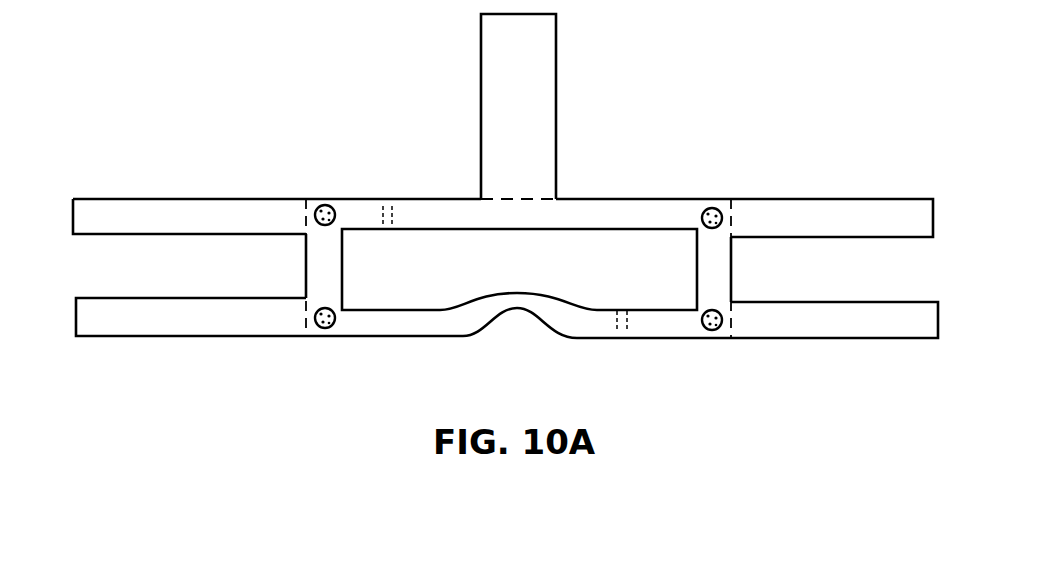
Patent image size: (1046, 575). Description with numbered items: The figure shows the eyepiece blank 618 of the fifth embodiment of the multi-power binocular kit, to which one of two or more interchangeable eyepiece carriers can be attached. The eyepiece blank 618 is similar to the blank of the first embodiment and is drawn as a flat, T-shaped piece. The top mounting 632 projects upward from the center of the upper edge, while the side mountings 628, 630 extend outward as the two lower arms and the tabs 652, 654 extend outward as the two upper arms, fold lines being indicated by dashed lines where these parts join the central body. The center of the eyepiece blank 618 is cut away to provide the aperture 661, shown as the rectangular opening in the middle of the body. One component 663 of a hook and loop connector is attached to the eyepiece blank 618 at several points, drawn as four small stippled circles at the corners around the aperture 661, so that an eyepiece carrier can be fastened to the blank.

The eyepiece blank 618 is at (584, 157).
The side mounting 628 is at (165, 337).
The side mounting 630 is at (810, 330).
The top mounting 632 is at (539, 62).
The tab 652 is at (243, 198).
The tab 654 is at (833, 213).
The aperture 661 is at (708, 267).
The hook and loop connector component 663 is at (332, 207).